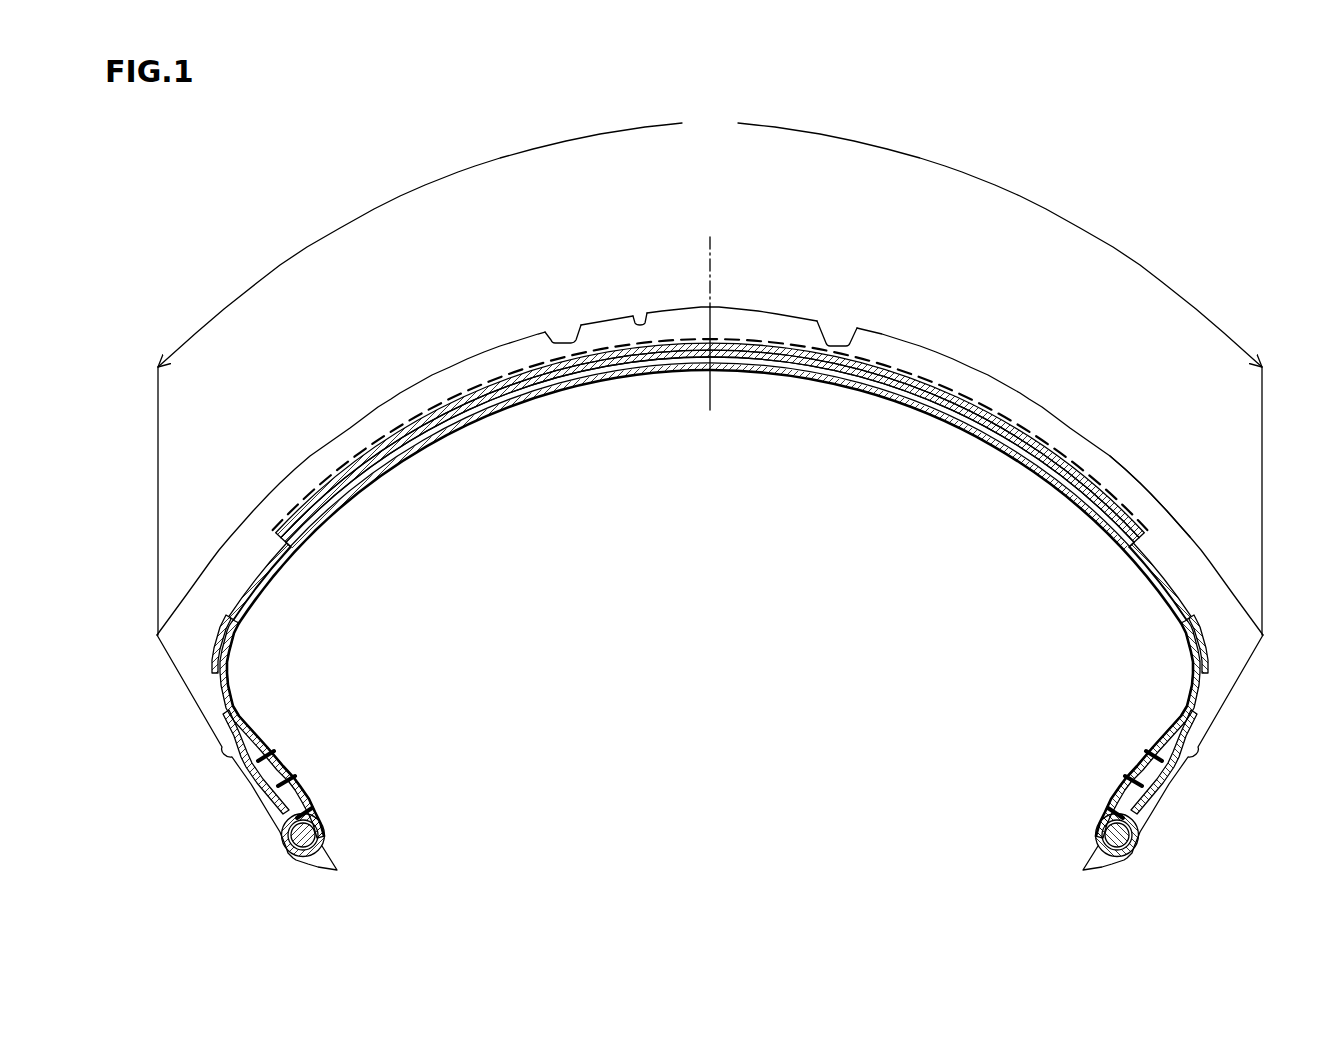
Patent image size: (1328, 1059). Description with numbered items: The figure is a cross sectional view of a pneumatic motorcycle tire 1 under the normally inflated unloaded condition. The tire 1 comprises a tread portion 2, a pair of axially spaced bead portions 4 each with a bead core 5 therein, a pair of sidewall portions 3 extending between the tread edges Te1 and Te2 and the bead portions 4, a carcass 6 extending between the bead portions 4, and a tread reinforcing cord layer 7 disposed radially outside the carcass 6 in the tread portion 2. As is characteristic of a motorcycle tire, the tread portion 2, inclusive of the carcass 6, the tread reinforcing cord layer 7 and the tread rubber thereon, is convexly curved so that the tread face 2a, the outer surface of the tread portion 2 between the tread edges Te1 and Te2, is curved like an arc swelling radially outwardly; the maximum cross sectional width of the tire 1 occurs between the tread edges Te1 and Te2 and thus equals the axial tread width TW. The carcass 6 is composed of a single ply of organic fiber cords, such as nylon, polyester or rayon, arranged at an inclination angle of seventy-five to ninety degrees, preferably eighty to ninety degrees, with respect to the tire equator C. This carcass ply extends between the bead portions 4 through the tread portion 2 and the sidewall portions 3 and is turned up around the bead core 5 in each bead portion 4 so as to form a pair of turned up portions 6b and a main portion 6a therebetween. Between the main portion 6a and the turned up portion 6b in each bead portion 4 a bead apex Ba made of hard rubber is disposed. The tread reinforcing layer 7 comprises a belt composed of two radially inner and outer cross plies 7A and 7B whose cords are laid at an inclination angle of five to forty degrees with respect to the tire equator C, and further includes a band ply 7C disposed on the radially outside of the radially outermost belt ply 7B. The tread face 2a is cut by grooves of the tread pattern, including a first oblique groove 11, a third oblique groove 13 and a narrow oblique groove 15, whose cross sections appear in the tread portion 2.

The pneumatic motorcycle tire 1 is at (1115, 225).
The tread portion 2 is at (1115, 382).
The tread face 2a is at (1140, 480).
The sidewall portion 3 is at (208, 752).
The bead portion 4 is at (272, 838).
The bead core 5 is at (324, 842).
The carcass 6 is at (1062, 665).
The main portion 6a is at (1190, 682).
The turned up portion 6b is at (1193, 723).
The tread reinforcing cord layer 7 is at (710, 499).
The radially inner belt ply 7A is at (352, 492).
The radially outer belt ply 7B is at (404, 462).
The band ply 7C is at (478, 432).
The first oblique groove 11 is at (836, 334).
The third oblique groove 13 is at (562, 332).
The narrow oblique groove 15 is at (640, 314).
The bead apex Ba is at (292, 790).
The tire equator C is at (710, 339).
The axial tread width TW is at (710, 238).
The tread edge Te1 is at (1263, 632).
The tread edge Te2 is at (157, 632).